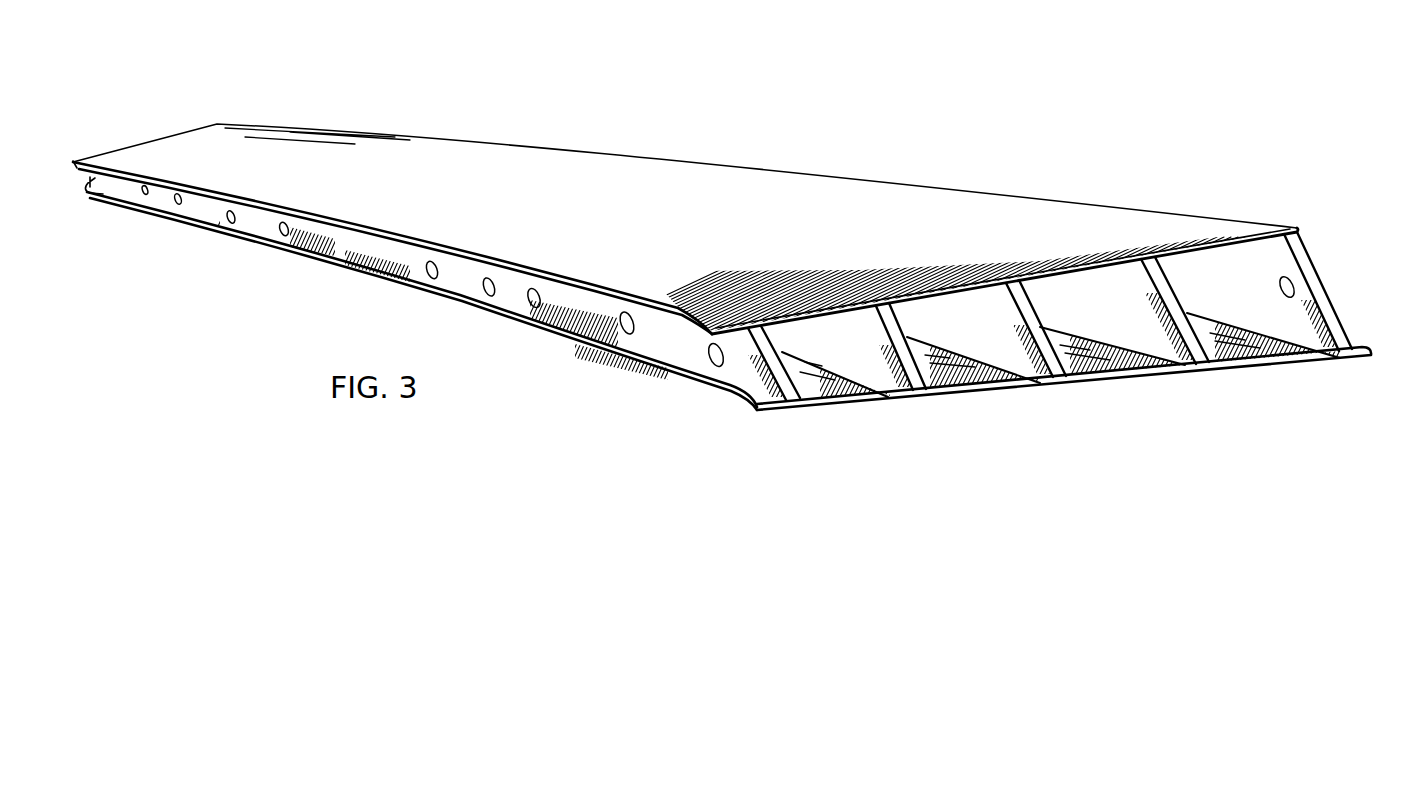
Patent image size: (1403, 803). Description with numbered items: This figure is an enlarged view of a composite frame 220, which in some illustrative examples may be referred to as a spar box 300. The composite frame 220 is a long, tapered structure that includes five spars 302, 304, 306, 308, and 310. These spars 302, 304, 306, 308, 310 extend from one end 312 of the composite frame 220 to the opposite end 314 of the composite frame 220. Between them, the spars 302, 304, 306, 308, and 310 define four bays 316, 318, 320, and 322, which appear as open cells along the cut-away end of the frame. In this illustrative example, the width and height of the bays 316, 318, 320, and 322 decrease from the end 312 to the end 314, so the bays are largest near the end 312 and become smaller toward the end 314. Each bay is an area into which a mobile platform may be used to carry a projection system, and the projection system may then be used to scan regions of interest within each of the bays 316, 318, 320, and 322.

The composite frame 220 is at (958, 112).
The spar box 300 is at (702, 142).
The spar 302 is at (800, 380).
The spar 304 is at (930, 370).
The spar 306 is at (1070, 362).
The spar 308 is at (1216, 350).
The spar 310 is at (1324, 343).
The end 312 is at (1304, 205).
The end 314 is at (155, 122).
The bay 316 is at (809, 341).
The bay 318 is at (929, 327).
The bay 320 is at (1070, 309).
The bay 322 is at (1198, 288).